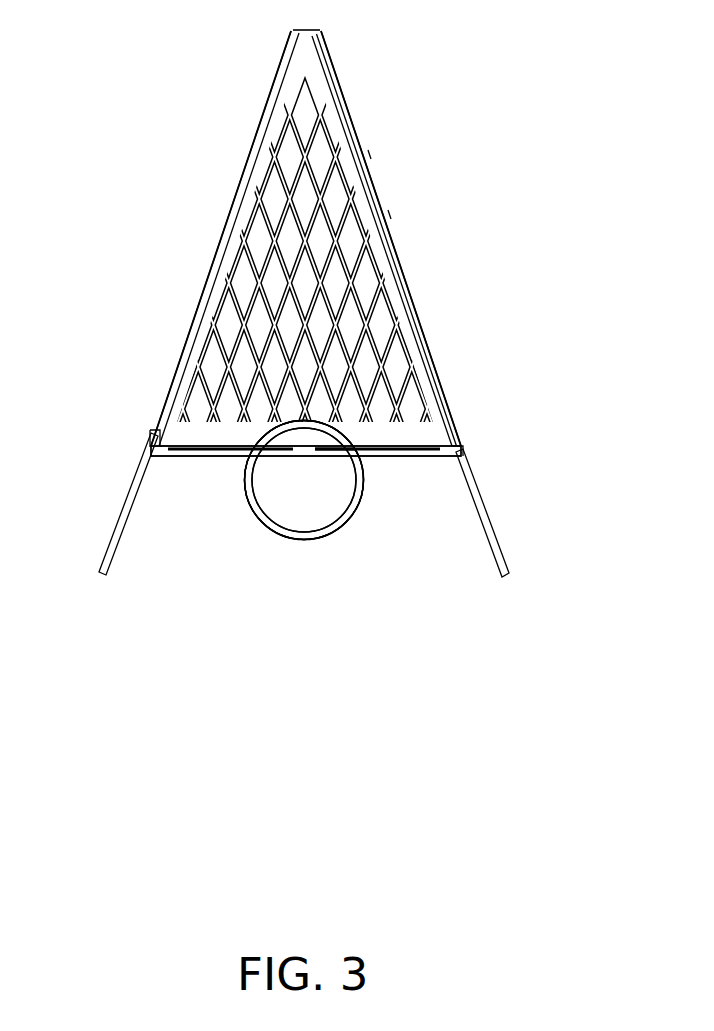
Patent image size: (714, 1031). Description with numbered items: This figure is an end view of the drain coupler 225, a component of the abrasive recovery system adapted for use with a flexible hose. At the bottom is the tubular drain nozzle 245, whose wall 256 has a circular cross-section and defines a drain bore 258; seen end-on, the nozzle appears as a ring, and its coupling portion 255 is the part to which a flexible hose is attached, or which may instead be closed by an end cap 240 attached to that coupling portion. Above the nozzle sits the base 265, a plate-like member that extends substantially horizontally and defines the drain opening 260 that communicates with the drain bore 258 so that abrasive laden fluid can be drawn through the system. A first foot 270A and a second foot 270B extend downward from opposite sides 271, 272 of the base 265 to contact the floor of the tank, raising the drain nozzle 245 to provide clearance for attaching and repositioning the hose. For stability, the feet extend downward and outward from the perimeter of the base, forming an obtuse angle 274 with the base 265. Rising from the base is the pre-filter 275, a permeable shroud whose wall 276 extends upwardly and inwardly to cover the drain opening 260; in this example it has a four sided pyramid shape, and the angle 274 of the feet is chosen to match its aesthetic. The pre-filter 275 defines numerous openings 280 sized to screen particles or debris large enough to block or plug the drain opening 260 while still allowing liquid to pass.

The drain coupler 225 is at (160, 110).
The pre-filter 275 is at (364, 150).
The wall 276 is at (215, 305).
The openings 280 is at (354, 244).
The side 271 is at (155, 432).
The side 272 is at (459, 450).
The foot 270A is at (117, 527).
The foot 270B is at (488, 517).
The base 265 is at (197, 455).
The coupling portion 255 is at (281, 531).
The wall 256 is at (368, 472).
The drain bore 258 is at (355, 508).
The drain opening 260 is at (315, 452).
The end cap 240 is at (348, 431).
The drain nozzle 245 is at (252, 516).
The obtuse angle 274 is at (168, 461).